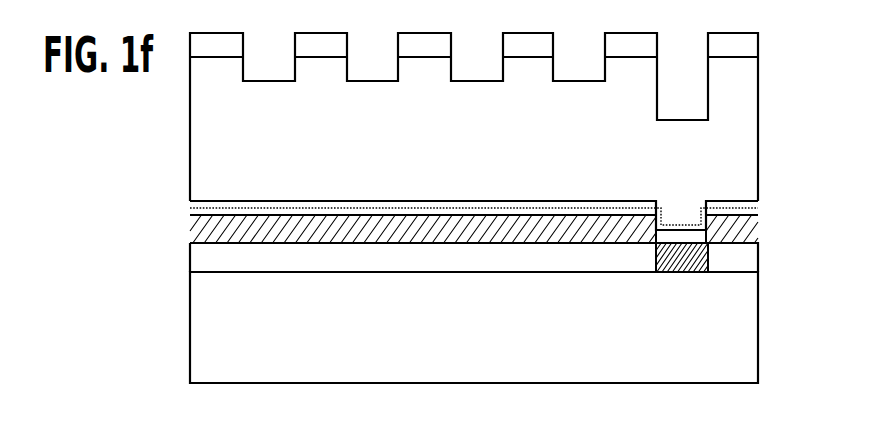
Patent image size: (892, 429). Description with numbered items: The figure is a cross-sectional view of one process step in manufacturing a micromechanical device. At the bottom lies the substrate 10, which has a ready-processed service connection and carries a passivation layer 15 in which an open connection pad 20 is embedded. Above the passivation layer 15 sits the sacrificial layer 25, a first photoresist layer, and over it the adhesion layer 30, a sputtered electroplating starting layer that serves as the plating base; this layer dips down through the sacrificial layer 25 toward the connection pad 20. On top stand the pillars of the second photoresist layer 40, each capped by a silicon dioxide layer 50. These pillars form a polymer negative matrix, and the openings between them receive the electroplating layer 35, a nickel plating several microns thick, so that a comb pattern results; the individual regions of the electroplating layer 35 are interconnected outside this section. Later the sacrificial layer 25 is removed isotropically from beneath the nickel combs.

The substrate 10 is at (752, 325).
The passivation layer 15 is at (752, 264).
The connection pad 20 is at (684, 275).
The sacrificial layer 25 is at (757, 233).
The adhesion layer 30 is at (757, 205).
The electroplating layer 35 is at (268, 85).
The second photoresist layer 40 is at (753, 138).
The silicon dioxide layer 50 is at (757, 40).